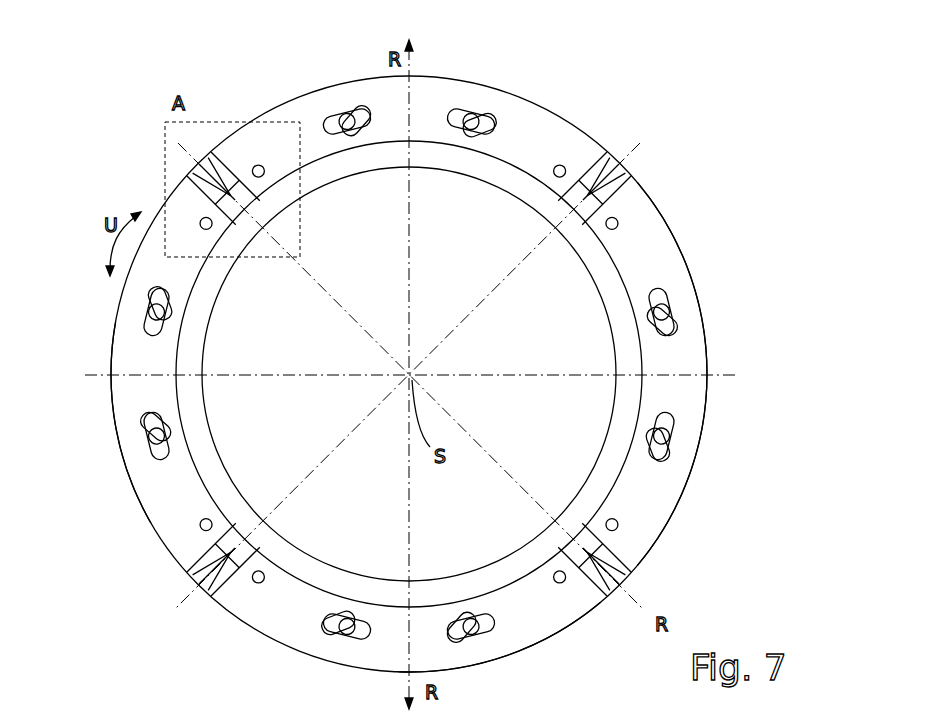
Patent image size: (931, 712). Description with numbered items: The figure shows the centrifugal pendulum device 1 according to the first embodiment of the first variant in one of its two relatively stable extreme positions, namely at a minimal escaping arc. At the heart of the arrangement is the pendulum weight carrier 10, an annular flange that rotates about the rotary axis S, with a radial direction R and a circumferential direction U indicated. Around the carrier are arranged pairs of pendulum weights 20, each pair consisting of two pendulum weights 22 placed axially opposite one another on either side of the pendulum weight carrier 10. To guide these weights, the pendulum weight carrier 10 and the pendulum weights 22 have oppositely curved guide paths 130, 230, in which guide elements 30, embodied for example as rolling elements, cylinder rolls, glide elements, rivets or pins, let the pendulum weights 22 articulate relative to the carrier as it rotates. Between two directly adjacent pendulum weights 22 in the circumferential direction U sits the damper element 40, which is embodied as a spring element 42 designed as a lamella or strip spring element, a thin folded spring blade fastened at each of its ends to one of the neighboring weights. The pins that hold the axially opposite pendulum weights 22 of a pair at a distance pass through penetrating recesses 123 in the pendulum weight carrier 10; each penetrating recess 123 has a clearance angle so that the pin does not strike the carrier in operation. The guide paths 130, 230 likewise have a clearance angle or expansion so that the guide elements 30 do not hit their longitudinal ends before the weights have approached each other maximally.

The centrifugal pendulum device 1 is at (480, 62).
The pendulum weight carrier 10 is at (523, 190).
The pair of pendulum weights 20 is at (712, 254).
The pendulum weight 22 is at (703, 393).
The guide element 30 is at (154, 306).
The damper element 40 is at (432, 403).
The spring element 42 is at (618, 166).
The penetrating recess 123 is at (588, 170).
The guide path 130 is at (141, 432).
The guide path 230 is at (170, 330).